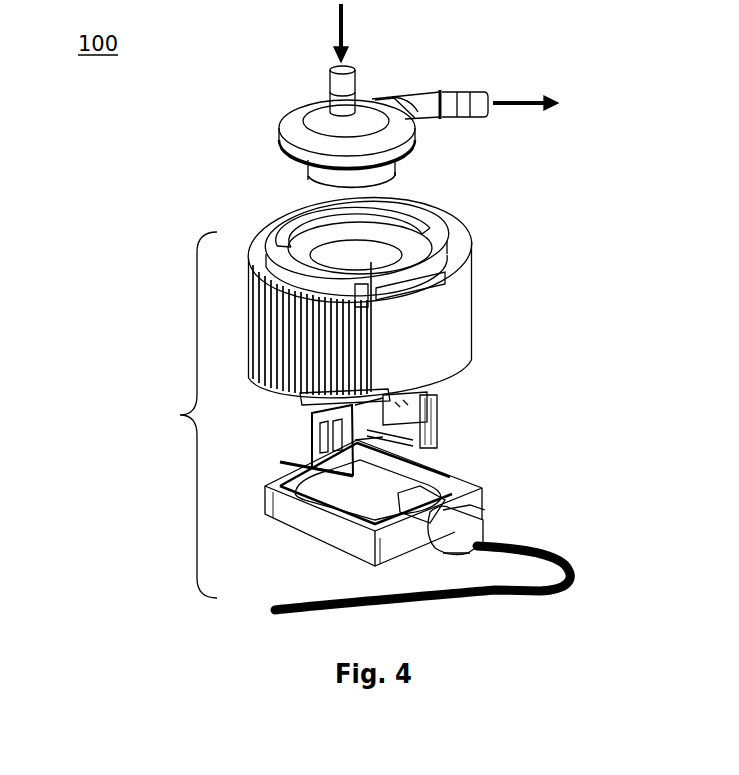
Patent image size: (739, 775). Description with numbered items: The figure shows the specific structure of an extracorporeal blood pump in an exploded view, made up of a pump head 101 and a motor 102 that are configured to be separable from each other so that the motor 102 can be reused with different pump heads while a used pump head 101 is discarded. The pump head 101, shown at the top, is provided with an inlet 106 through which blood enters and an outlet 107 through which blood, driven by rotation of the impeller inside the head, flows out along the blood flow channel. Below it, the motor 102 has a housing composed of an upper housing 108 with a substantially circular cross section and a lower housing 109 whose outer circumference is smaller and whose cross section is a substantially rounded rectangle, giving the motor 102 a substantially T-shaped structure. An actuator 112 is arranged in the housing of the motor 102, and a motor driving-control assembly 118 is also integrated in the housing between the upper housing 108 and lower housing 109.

The pump head 101 is at (279, 133).
The motor 102 is at (177, 415).
The inlet 106 is at (333, 89).
The outlet 107 is at (449, 100).
The upper housing 108 is at (437, 318).
The lower housing 109 is at (469, 513).
The actuator 112 is at (360, 253).
The motor driving-control assembly 118 is at (350, 414).